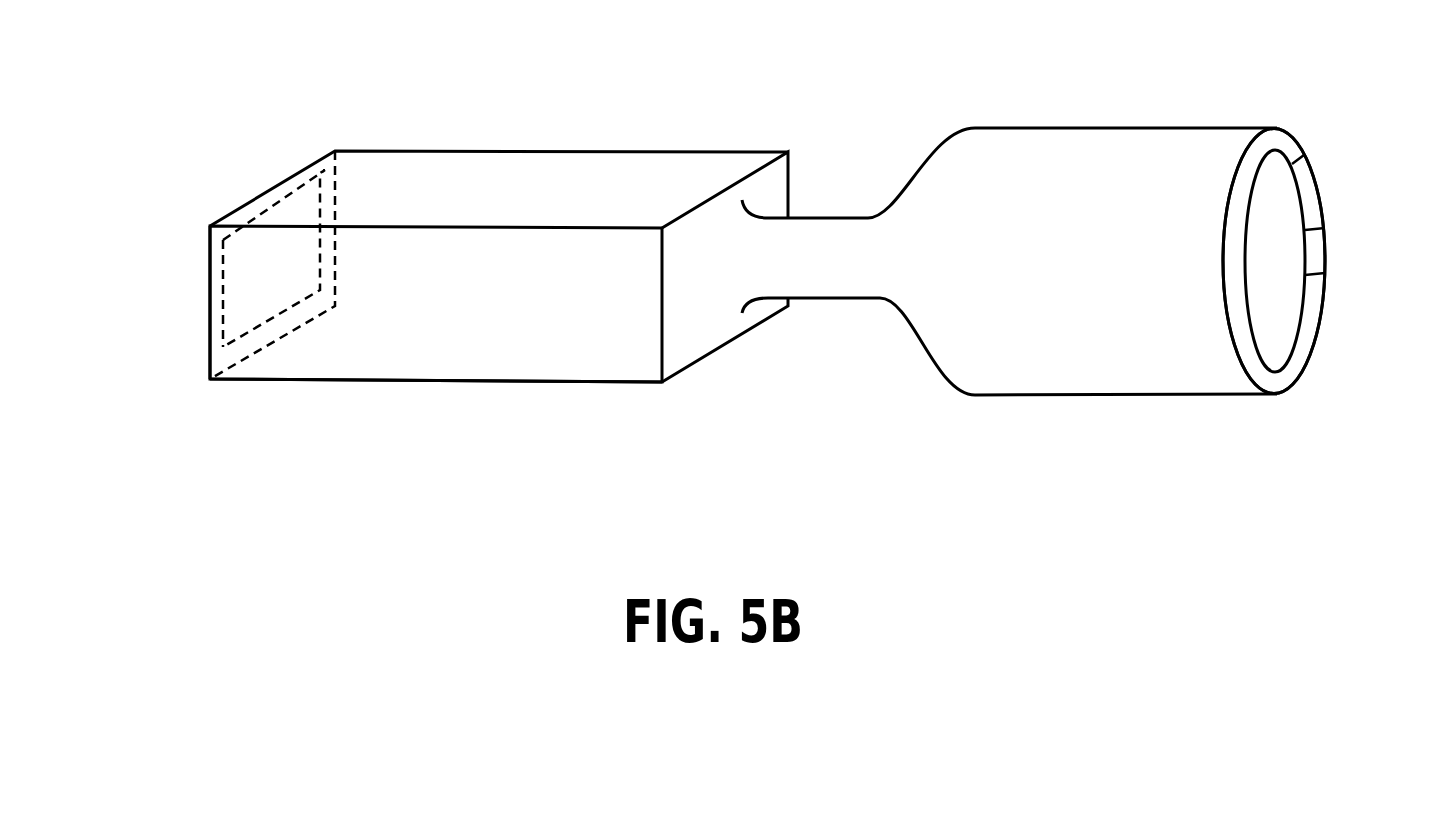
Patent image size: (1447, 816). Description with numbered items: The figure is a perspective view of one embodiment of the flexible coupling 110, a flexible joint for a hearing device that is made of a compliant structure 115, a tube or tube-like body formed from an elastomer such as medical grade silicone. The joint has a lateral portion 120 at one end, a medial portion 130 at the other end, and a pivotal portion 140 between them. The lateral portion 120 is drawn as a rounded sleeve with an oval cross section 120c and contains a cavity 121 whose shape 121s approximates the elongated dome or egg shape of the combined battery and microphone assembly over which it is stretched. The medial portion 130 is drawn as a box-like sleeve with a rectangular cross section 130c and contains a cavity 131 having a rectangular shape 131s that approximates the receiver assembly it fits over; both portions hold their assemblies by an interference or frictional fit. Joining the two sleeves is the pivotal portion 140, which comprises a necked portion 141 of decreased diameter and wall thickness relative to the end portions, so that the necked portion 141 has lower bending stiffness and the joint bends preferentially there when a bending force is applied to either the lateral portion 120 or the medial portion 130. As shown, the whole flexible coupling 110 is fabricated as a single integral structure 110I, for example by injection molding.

The flexible coupling 110 is at (1063, 449).
The single integral structure 110I is at (383, 148).
The compliant structure 115 is at (330, 382).
The lateral portion 120 is at (1101, 152).
The oval cross section 120c is at (1307, 160).
The cavity 121 is at (1277, 282).
The shape of cavity 121s is at (1325, 232).
The medial portion 130 is at (578, 173).
The rectangular cross section 130c is at (207, 329).
The cavity 131 is at (247, 248).
The rectangular shape 131s is at (223, 291).
The pivotal portion 140 is at (842, 230).
The necked portion 141 is at (830, 300).